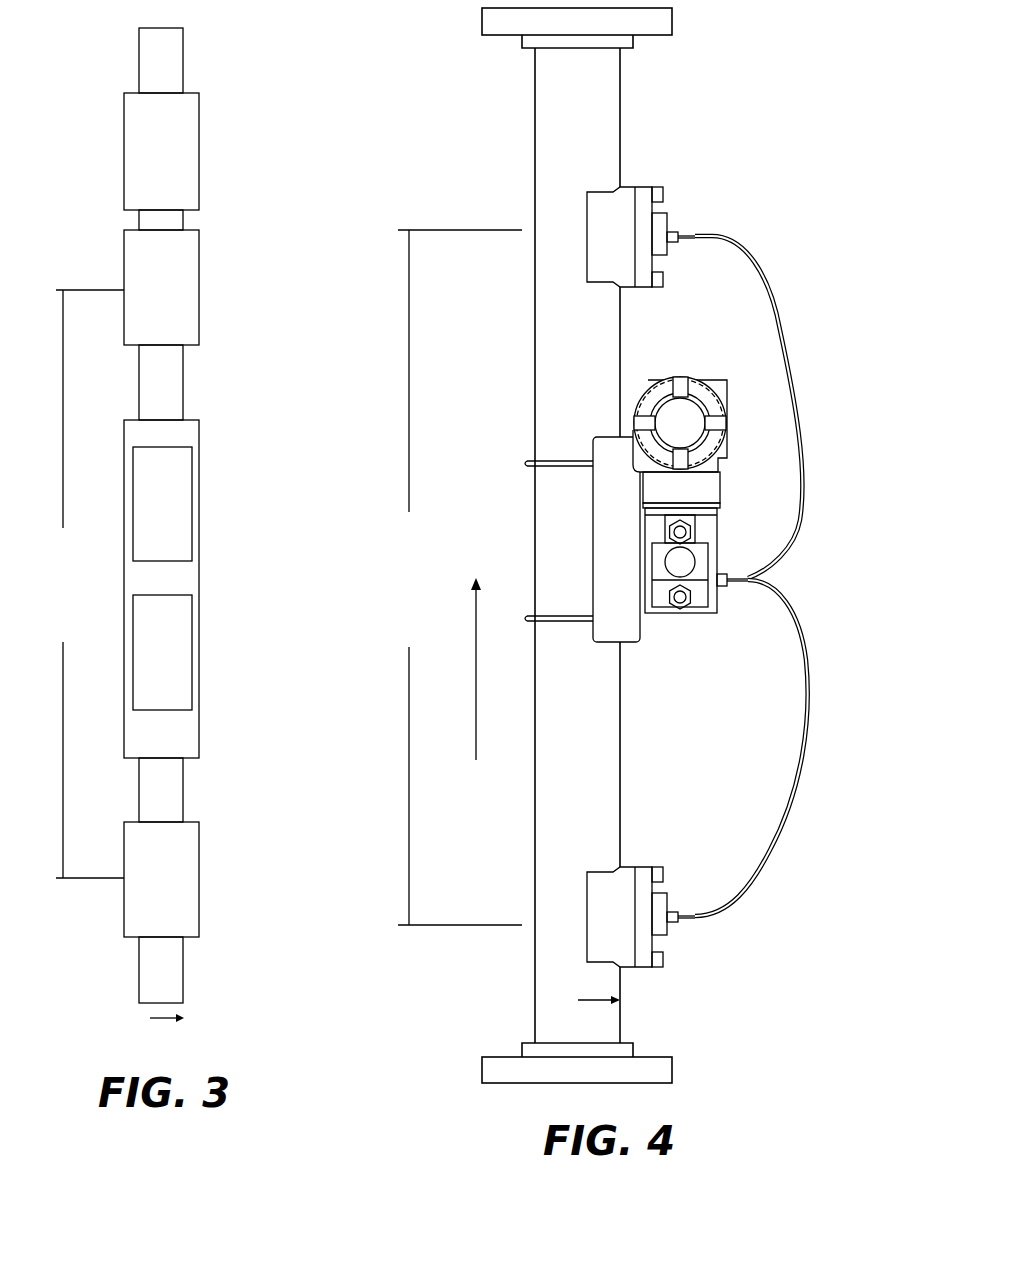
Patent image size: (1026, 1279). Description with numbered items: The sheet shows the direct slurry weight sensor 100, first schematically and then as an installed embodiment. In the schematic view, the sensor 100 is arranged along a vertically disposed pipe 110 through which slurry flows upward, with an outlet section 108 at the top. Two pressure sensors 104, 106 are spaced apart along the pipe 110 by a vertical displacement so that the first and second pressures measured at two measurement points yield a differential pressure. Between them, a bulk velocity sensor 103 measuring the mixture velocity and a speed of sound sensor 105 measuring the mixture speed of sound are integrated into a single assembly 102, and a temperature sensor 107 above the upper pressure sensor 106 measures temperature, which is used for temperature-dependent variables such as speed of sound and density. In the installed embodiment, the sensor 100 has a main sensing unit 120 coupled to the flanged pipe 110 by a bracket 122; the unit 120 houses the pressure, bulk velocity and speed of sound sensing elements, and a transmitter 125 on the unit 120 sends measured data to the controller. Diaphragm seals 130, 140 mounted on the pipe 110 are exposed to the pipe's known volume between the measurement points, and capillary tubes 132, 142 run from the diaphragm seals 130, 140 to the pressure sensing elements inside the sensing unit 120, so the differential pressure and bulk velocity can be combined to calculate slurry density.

In FIG. 3, the direct slurry weight sensor 100 is at (78, 62).
In FIG. 4, the direct slurry weight sensor 100 is at (390, 88).
In FIG. 3, the single assembly 102 is at (200, 428).
In FIG. 3, the bulk velocity sensor 103 is at (193, 638).
In FIG. 3, the pressure sensor 104 is at (200, 852).
In FIG. 3, the speed of sound sensor 105 is at (193, 495).
In FIG. 3, the pressure sensor 106 is at (200, 283).
In FIG. 3, the temperature sensor 107 is at (200, 135).
In FIG. 3, the pipe outlet section 108 is at (184, 58).
In FIG. 4, the pipe 110 is at (535, 157).
In FIG. 4, the main sensing unit 120 is at (688, 616).
In FIG. 4, the bracket 122 is at (527, 462).
In FIG. 4, the transmitter 125 is at (725, 452).
In FIG. 4, the diaphragm seal 130 is at (670, 935).
In FIG. 4, the capillary tube 132 is at (810, 690).
In FIG. 4, the diaphragm seal 140 is at (672, 213).
In FIG. 4, the capillary tube 142 is at (775, 322).